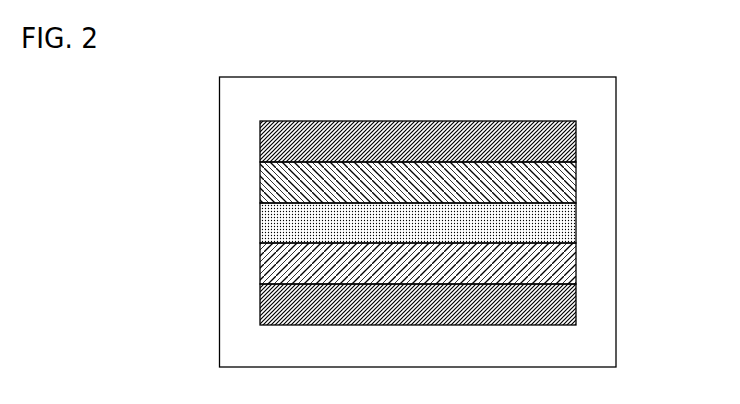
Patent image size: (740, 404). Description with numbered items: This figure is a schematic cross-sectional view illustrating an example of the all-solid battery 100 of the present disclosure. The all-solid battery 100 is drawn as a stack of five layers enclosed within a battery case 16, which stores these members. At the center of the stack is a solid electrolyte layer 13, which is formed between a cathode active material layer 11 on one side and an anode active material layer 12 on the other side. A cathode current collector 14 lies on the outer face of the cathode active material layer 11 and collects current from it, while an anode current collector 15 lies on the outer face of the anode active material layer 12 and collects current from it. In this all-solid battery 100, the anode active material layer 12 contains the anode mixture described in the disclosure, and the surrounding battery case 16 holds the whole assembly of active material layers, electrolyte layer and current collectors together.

The all-solid battery 100 is at (603, 28).
The battery case 16 is at (585, 92).
The cathode current collector 14 is at (557, 142).
The cathode active material layer 11 is at (557, 183).
The solid electrolyte layer 13 is at (557, 221).
The anode active material layer 12 is at (557, 263).
The anode current collector 15 is at (576, 305).